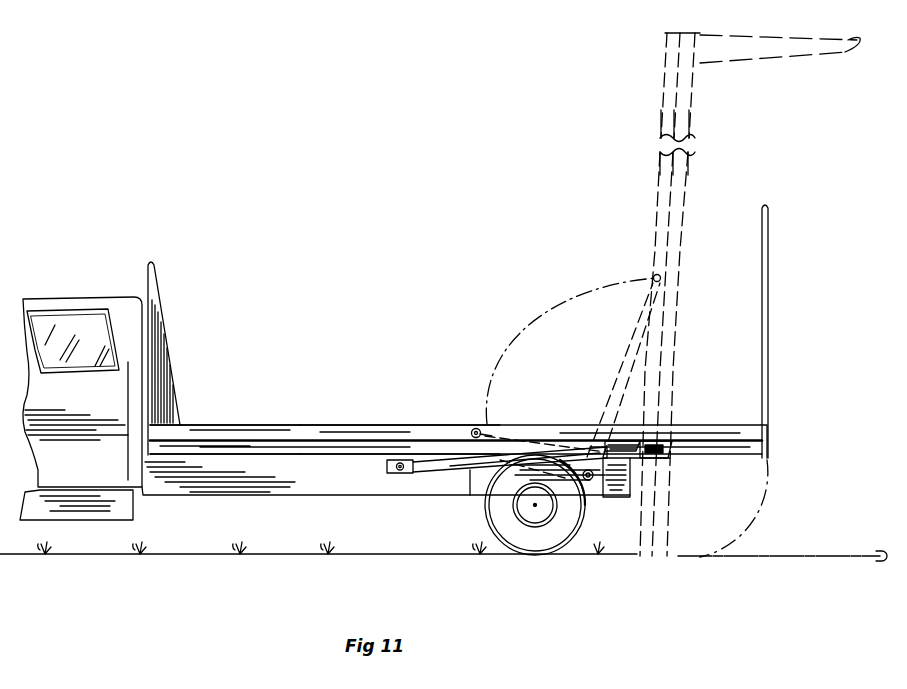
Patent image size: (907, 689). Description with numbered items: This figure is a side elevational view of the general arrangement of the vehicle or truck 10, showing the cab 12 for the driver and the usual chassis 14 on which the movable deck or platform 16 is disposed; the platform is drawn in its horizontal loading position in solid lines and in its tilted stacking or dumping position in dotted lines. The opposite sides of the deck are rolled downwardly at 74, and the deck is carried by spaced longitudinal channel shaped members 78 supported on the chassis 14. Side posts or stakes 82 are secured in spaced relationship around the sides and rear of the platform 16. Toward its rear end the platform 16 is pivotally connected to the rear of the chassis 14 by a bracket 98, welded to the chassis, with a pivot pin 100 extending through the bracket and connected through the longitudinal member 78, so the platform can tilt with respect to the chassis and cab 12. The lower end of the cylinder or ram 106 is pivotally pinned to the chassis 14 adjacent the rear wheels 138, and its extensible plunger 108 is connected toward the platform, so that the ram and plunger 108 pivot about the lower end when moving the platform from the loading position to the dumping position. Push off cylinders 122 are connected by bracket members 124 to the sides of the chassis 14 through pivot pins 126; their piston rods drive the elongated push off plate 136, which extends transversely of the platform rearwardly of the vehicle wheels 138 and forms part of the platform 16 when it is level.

The vehicle or truck 10 is at (53, 296).
The cab 12 is at (70, 297).
The chassis 14 is at (216, 496).
The platform 16 is at (258, 432).
The rolled side 74 is at (340, 432).
The longitudinal channel shaped member 78 is at (187, 435).
The side post 82 is at (770, 268).
The bracket 98 is at (642, 470).
The pivot pin 100 is at (660, 452).
The cylinder or ram 106 is at (485, 431).
The extensible plunger 108 is at (638, 328).
The push off cylinder 122 is at (467, 468).
The bracket member 124 is at (385, 477).
The pivot pin 126 is at (400, 475).
The push off plate 136 is at (672, 425).
The vehicle wheels 138 is at (576, 541).